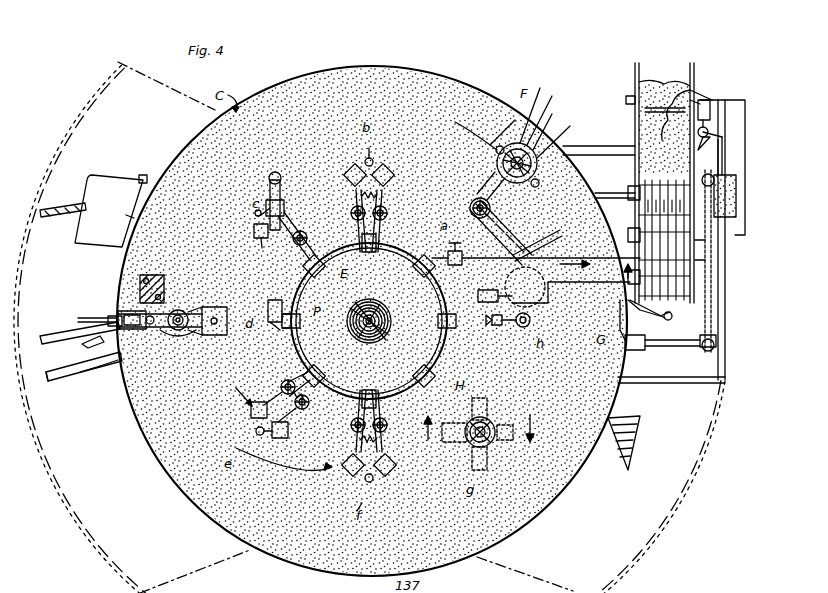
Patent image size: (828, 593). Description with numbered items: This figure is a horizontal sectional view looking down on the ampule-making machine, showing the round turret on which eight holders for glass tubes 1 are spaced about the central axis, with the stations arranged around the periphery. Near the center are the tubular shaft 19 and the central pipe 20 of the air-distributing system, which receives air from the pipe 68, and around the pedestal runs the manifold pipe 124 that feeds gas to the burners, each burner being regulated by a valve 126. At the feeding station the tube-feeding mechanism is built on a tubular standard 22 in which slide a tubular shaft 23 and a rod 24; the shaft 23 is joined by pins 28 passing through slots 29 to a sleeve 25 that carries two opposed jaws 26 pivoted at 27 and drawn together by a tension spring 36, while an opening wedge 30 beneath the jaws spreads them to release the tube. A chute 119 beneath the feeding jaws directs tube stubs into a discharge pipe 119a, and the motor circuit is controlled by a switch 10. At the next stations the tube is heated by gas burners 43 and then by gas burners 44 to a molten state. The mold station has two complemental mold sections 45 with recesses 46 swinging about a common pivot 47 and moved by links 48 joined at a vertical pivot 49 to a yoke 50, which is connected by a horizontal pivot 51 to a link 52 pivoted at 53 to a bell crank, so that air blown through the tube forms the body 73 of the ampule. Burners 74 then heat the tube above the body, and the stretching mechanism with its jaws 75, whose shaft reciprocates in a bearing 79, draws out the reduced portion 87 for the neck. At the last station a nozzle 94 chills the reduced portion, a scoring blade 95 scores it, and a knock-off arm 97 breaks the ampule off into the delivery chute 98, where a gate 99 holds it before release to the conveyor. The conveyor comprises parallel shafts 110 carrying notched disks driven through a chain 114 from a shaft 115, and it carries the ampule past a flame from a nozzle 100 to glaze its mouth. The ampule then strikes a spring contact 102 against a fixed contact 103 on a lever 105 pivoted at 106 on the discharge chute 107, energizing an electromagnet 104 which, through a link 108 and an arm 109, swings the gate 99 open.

The glass tube 1 is at (350, 306).
The switch 10 is at (108, 250).
The tubular shaft 19 is at (383, 327).
The central pipe 20 is at (366, 344).
The tubular standard 22 is at (545, 124).
The tubular shaft 23 is at (559, 135).
The rod 24 is at (528, 230).
The sleeve 25 is at (549, 109).
The jaws 26 is at (470, 200).
The pivot 27 is at (494, 140).
The pins 28 is at (533, 102).
The slots 29 is at (498, 150).
The opening wedge 30 is at (450, 158).
The tension spring 36 is at (492, 145).
The gas burners 43 is at (376, 172).
The gas burners 44 is at (318, 190).
The mold sections 45 is at (222, 306).
The recesses 46 is at (164, 284).
The common pivot 47 is at (180, 332).
The links 48 is at (146, 330).
The vertical pivot 49 is at (138, 290).
The yoke 50 is at (116, 362).
The horizontal pivot 51 is at (90, 371).
The link 52 is at (82, 336).
The pivot 53 is at (104, 313).
The pipe 68 is at (60, 378).
The body 73 is at (560, 360).
The burners 74 is at (250, 410).
The jaws 75 is at (462, 420).
The bearing 79 is at (672, 318).
The reduced portion 87 is at (465, 432).
The nozzle 94 is at (500, 326).
The scoring blade 95 is at (486, 300).
The knock-off arm 97 is at (478, 266).
The delivery chute 98 is at (600, 272).
The gate 99 is at (555, 245).
The nozzle 100 is at (610, 192).
The spring contact 102 is at (632, 118).
The fixed contact 103 is at (645, 110).
The electromagnet 104 is at (712, 258).
The lever 105 is at (716, 122).
The pivot 106 is at (706, 100).
The chute 107 is at (645, 88).
The link 108 is at (730, 138).
The arm 109 is at (650, 350).
The shafts 110 is at (714, 284).
The chain 114 is at (726, 318).
The shaft 115 is at (692, 383).
The chute 119 is at (392, 310).
The discharge pipe 119a is at (614, 448).
The manifold pipe 124 is at (292, 332).
The valve 126 is at (351, 215).